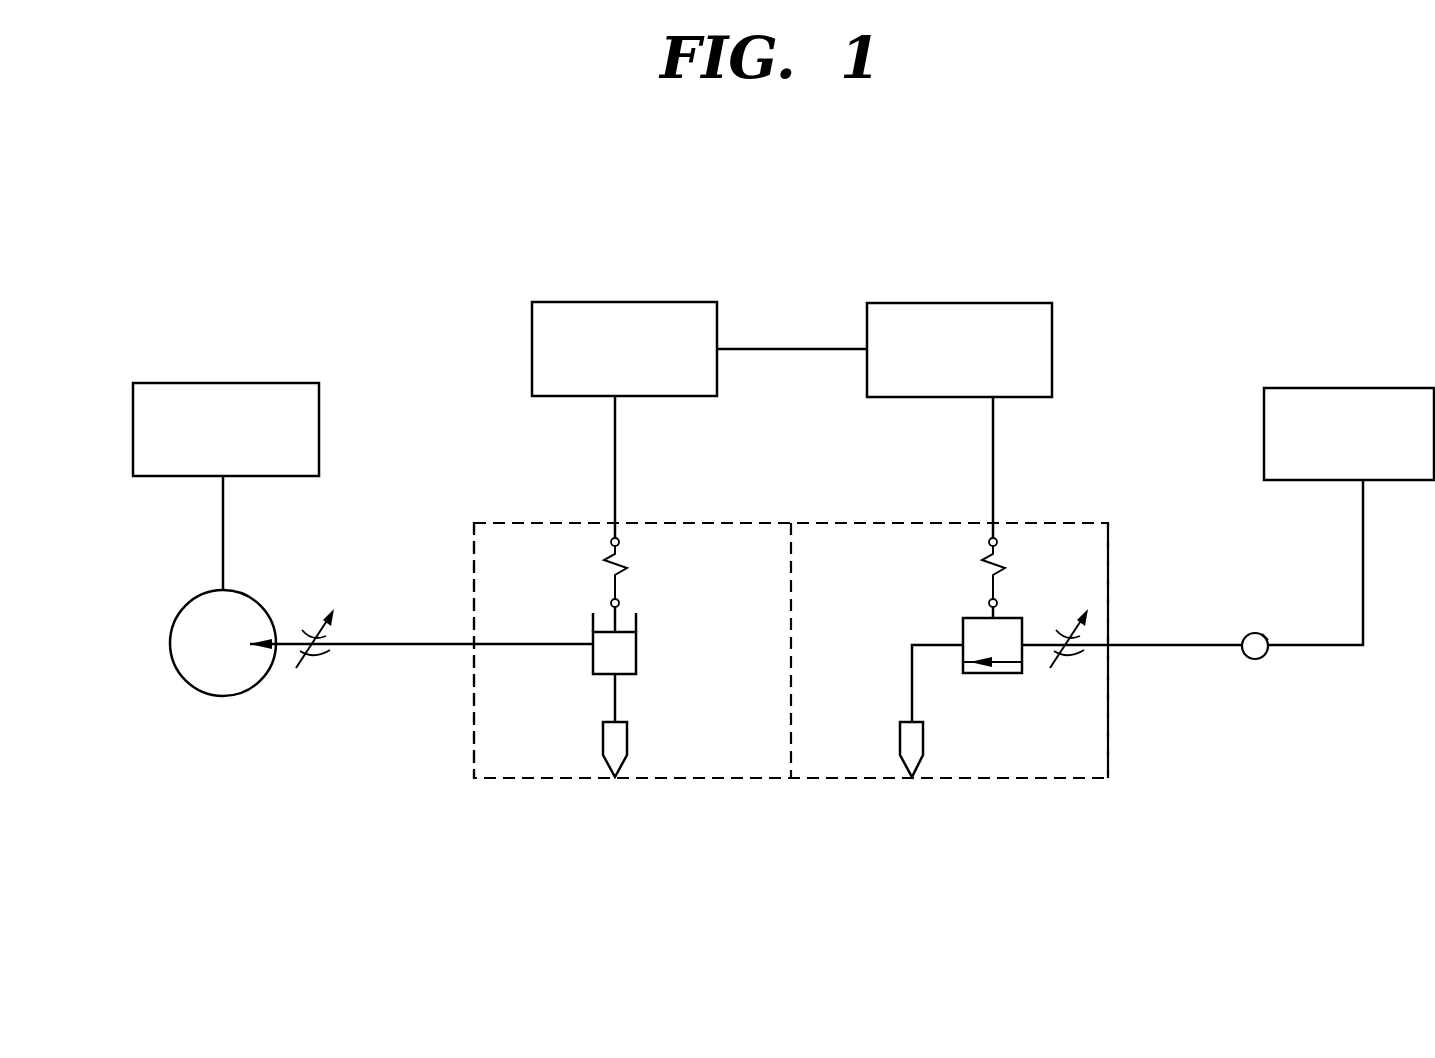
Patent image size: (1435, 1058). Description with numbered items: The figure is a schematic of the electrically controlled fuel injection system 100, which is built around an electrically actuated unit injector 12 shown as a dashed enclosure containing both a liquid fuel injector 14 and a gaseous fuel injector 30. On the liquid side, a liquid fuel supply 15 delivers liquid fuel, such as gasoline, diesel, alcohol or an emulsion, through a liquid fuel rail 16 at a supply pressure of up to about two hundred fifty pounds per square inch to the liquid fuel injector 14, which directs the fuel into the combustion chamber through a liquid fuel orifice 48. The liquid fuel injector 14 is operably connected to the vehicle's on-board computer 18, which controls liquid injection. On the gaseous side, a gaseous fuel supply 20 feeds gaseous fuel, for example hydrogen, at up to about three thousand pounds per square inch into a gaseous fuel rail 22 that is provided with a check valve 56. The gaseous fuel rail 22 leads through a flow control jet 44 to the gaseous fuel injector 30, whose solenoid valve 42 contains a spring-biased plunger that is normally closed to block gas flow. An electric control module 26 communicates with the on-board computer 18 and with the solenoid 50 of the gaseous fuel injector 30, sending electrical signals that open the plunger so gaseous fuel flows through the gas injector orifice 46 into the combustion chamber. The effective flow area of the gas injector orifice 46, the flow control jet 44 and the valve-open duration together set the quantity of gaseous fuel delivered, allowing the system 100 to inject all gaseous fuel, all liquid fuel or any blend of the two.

The electrically controlled fuel injection system 100 is at (835, 212).
The electrically actuated unit injector 12 is at (792, 812).
The liquid fuel injector 14 is at (462, 724).
The liquid fuel supply 15 is at (319, 412).
The liquid fuel rail 16 is at (388, 646).
The on-board computer 18 is at (627, 302).
The gaseous fuel supply 20 is at (1353, 388).
The gaseous fuel rail 22 is at (1197, 645).
The electric control module 26 is at (1054, 338).
The gaseous fuel injector 30 is at (1125, 771).
The solenoid valve 42 is at (1022, 673).
The flow control jet 44 is at (1085, 612).
The gas injector orifice 46 is at (923, 768).
The liquid fuel orifice 48 is at (605, 765).
The solenoid 50 is at (1010, 525).
The check valve 56 is at (1262, 658).